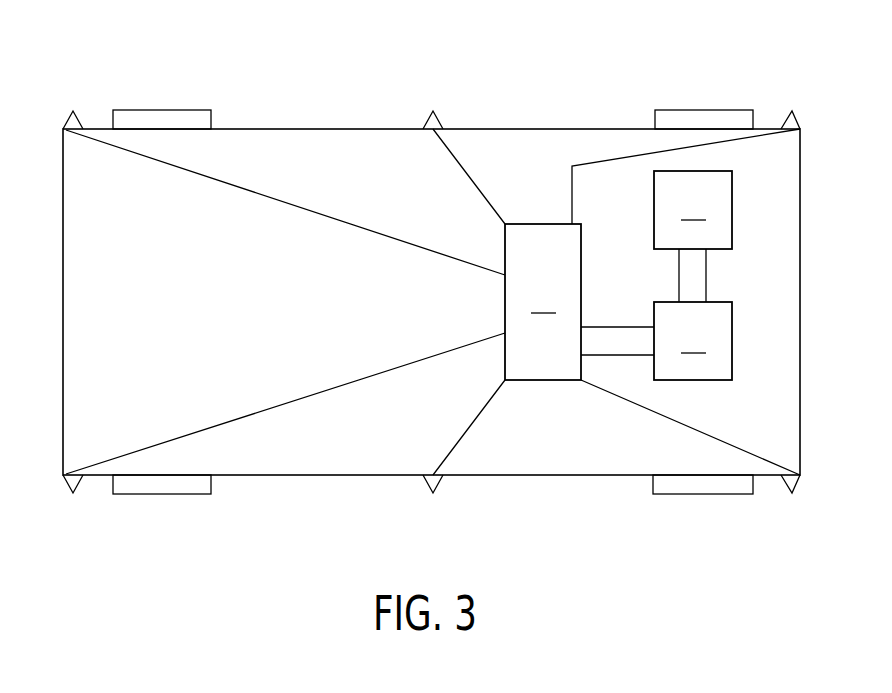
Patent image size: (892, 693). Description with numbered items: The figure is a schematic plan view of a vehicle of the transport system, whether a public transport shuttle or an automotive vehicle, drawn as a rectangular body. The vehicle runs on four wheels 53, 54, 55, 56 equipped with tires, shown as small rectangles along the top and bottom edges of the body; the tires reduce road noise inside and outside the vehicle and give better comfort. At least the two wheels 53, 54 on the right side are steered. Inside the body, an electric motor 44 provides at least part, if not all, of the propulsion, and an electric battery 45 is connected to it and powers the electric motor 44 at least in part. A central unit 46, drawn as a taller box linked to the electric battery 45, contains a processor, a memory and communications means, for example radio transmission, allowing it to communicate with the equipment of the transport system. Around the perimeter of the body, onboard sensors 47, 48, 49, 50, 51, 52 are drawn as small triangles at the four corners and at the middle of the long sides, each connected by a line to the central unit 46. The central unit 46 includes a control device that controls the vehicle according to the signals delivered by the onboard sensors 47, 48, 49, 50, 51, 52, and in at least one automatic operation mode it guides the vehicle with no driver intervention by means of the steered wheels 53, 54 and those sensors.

The electric motor 44 is at (693, 210).
The electric battery 45 is at (693, 341).
The central unit 46 is at (543, 302).
The onboard sensor 47 is at (795, 108).
The onboard sensor 48 is at (795, 497).
The onboard sensor 49 is at (70, 108).
The onboard sensor 50 is at (70, 496).
The onboard sensor 51 is at (436, 108).
The onboard sensor 52 is at (436, 496).
The steered wheel 53 is at (710, 120).
The steered wheel 54 is at (710, 485).
The wheel 55 is at (155, 120).
The wheel 56 is at (153, 485).